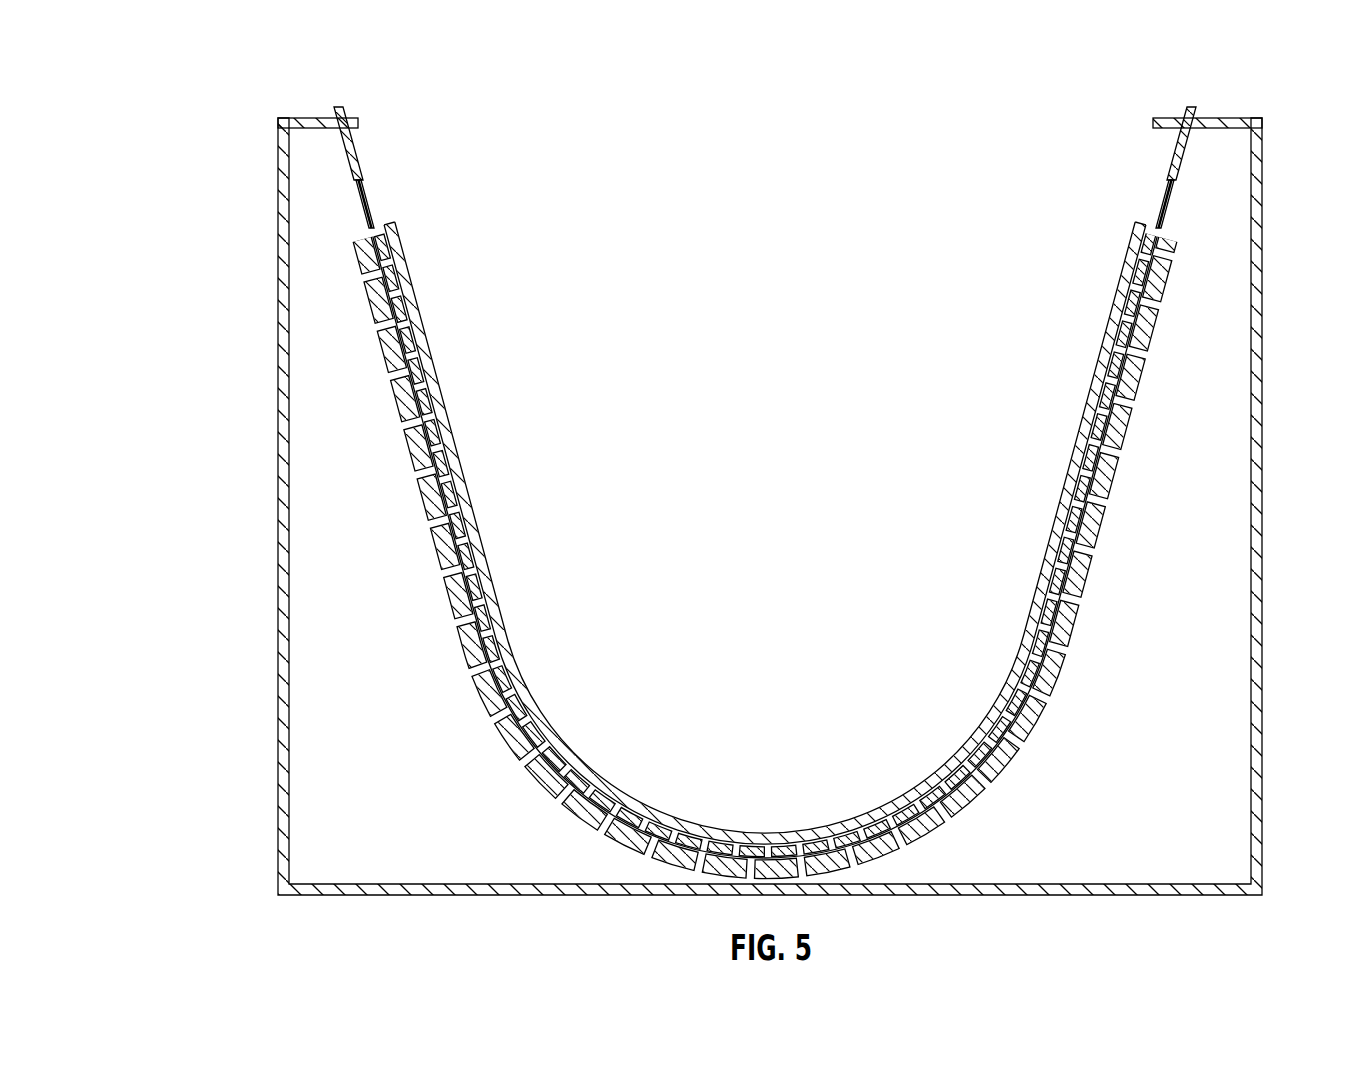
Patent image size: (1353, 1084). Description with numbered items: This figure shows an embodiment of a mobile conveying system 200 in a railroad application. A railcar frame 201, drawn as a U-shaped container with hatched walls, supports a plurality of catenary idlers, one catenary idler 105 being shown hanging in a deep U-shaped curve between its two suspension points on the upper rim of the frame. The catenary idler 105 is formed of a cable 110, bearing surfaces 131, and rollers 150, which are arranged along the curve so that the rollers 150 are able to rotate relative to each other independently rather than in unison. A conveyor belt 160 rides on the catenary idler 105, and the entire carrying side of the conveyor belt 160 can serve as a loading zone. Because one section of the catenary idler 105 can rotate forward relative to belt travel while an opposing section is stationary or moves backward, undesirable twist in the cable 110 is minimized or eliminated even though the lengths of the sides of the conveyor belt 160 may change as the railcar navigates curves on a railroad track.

The mobile conveying system 200 is at (217, 72).
The railcar frame 201 is at (278, 397).
The catenary idler 105 is at (440, 647).
The conveyor belt 160 is at (434, 395).
The bearing surface 131 is at (384, 291).
The cable 110 is at (388, 322).
The roller 150 is at (353, 247).